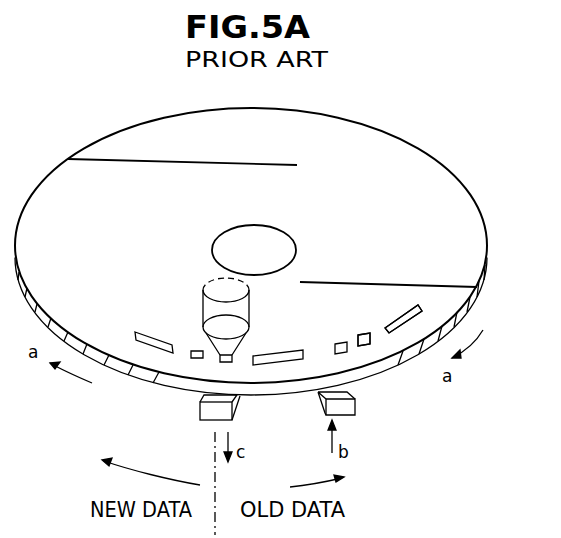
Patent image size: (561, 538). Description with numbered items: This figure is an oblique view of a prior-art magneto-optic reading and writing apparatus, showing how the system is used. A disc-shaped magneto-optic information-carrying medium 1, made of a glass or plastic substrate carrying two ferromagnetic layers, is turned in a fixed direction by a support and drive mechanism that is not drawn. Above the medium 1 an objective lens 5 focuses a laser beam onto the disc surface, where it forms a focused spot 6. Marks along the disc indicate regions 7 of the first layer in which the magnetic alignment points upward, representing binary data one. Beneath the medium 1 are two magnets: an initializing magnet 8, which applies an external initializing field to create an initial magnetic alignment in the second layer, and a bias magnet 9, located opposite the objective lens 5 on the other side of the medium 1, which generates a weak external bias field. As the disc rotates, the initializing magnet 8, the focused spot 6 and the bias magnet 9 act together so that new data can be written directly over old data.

The magneto-optic information-carrying medium 1 is at (458, 178).
The objective lens 5 is at (203, 330).
The focused spot 6 is at (222, 362).
The regions in the first layer with upward magnetic alignment 7 is at (365, 343).
The initializing magnet 8 is at (343, 406).
The bias magnet 9 is at (200, 410).